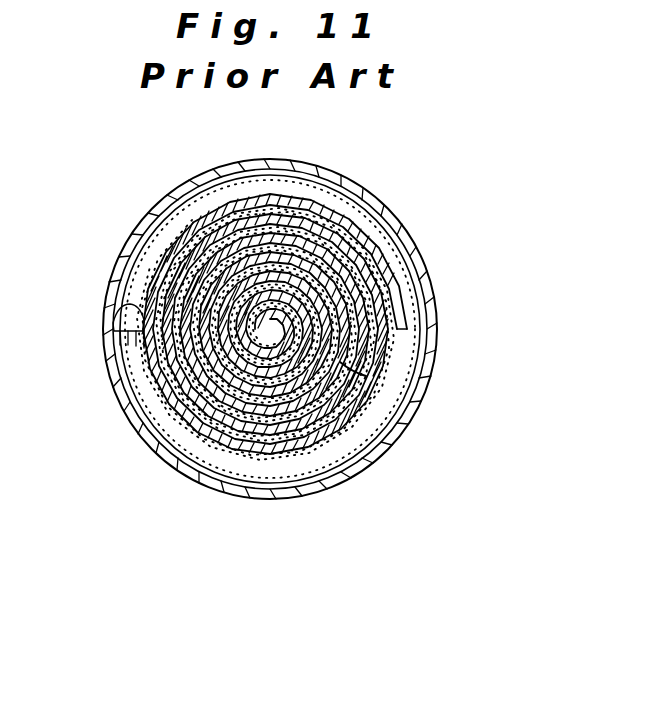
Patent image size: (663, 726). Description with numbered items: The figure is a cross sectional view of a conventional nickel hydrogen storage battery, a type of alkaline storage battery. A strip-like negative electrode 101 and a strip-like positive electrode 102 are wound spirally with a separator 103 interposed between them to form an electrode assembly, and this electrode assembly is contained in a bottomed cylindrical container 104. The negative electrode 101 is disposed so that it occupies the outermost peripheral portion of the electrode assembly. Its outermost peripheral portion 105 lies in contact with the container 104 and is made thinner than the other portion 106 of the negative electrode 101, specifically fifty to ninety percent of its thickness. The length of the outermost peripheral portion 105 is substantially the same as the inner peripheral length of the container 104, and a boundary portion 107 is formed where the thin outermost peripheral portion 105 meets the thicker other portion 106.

The negative electrode 101 is at (352, 465).
The positive electrode 102 is at (430, 317).
The separator 103 is at (355, 366).
The container 104 is at (356, 478).
The outermost peripheral portion 105 is at (190, 468).
The other portion 106 is at (373, 377).
The boundary portion 107 is at (140, 314).